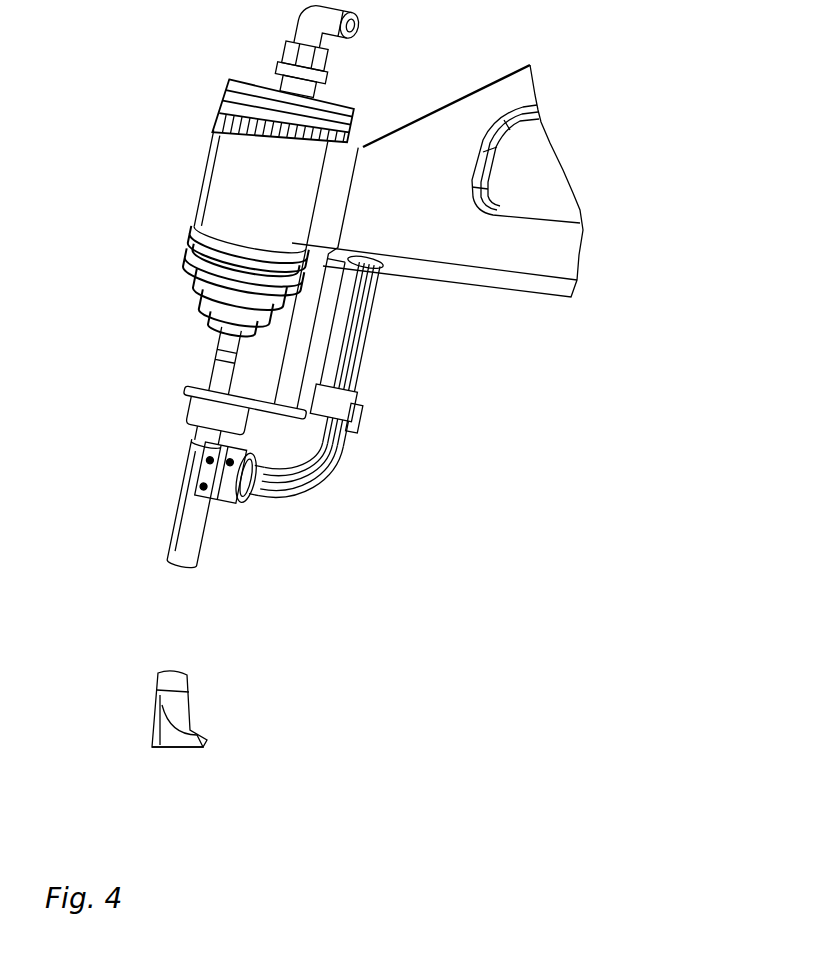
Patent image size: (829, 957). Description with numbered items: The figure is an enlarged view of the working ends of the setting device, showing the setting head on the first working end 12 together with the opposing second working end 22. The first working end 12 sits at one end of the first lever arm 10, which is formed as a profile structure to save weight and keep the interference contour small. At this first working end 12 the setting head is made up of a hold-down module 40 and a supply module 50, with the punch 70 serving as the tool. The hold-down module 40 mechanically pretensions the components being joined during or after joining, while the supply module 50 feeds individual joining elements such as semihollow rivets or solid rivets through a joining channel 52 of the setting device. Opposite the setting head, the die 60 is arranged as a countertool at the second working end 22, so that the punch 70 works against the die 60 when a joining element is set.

The first lever arm 10 is at (562, 243).
The first working end 12 is at (333, 183).
The hold-down module 40 is at (197, 240).
The punch 70 is at (235, 353).
The supply module 50 is at (187, 390).
The joining channel 52 is at (187, 510).
The die 60 is at (185, 683).
The second working end 22 is at (170, 730).